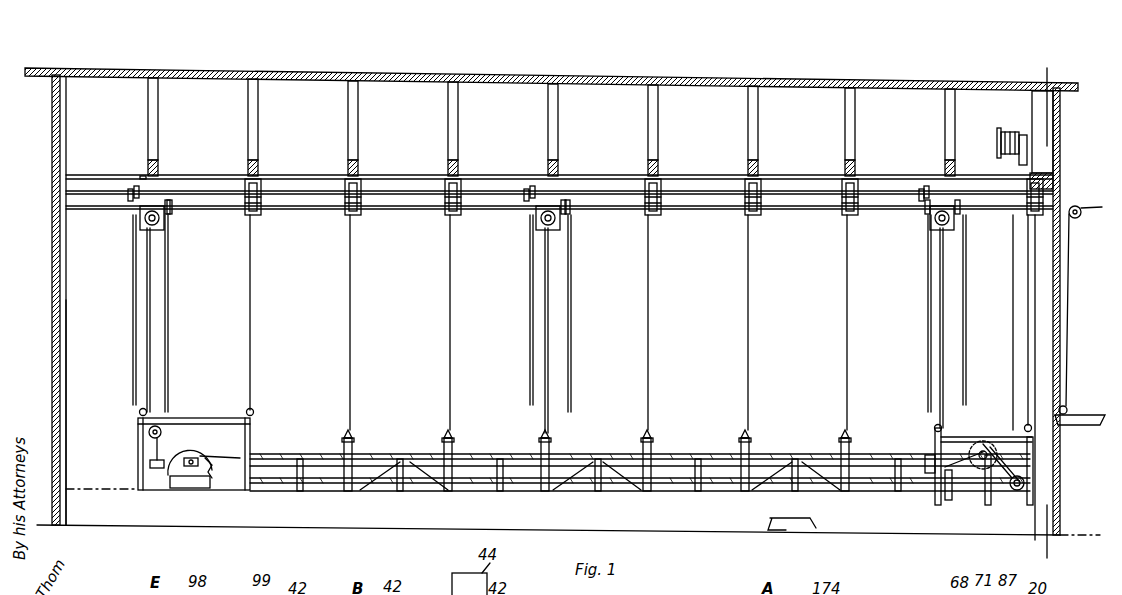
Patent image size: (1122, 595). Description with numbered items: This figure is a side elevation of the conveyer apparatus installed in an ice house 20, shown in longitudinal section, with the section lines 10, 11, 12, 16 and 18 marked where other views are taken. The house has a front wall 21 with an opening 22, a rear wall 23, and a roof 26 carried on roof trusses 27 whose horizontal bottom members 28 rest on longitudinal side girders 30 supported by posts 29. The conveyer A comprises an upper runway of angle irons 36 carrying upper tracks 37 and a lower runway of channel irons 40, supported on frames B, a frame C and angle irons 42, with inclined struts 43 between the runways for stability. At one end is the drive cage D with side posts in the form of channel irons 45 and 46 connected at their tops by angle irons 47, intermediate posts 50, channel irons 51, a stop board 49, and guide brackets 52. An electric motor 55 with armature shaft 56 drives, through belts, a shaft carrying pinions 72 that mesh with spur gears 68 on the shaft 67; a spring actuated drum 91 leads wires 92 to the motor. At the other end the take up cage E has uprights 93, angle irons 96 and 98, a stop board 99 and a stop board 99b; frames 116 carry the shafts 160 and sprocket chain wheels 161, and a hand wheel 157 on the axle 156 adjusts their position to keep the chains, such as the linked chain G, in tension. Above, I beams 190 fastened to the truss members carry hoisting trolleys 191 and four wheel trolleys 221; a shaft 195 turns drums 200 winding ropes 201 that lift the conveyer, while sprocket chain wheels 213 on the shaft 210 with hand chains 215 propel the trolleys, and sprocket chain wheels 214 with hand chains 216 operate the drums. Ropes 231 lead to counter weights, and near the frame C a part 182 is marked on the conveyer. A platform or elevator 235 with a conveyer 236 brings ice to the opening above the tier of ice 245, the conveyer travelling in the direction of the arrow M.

The section line 10 is at (424, 515).
The section line 11 is at (518, 520).
The section line 12 is at (584, 152).
The section line 16 is at (470, 152).
The section line 18 is at (1026, 306).
The ice house 20 is at (786, 287).
The front wall 21 is at (1060, 122).
The opening 22 is at (1066, 295).
The rear wall 23 is at (536, 305).
The roof 26 is at (320, 72).
The roof trusses 27 is at (260, 125).
The horizontal bottom members 28 is at (160, 168).
The posts 29 is at (66, 373).
The longitudinal side girders 30 is at (102, 176).
The angle irons 36 is at (882, 470).
The upper tracks 37 is at (818, 460).
The channel irons 40 is at (272, 492).
The angle irons 42 is at (300, 492).
The inclined struts 43 is at (582, 472).
The channel irons 45 is at (940, 498).
The channel irons 46 is at (1033, 461).
The angle irons 47 is at (1000, 445).
The stop board 49 is at (945, 482).
The channel irons 50 is at (985, 482).
The channel irons 51 is at (988, 494).
The guide brackets 52 is at (932, 453).
The electric motor 55 is at (1025, 483).
The armature shaft 56 is at (1022, 488).
The shaft 67 is at (975, 450).
The spur gears 68 is at (978, 470).
The pinions 72 is at (983, 441).
The spring actuated drum 91 is at (1005, 132).
The wires 92 is at (1013, 268).
The channel irons 93 is at (150, 455).
The angle irons 96 is at (247, 492).
The angle irons 98 is at (230, 424).
The stop board 99 is at (250, 472).
The stop board 99b is at (252, 422).
The frames 116 is at (190, 473).
The axle 156 is at (149, 433).
The hand wheel 157 is at (168, 440).
The shaft 160 is at (222, 468).
The sprocket chain wheel 161 is at (204, 456).
The pin 182 is at (550, 436).
The I beams 190 is at (150, 168).
The hoisting trolleys 191 is at (142, 214).
The shaft 195 is at (690, 210).
The drums 200 is at (558, 330).
The ropes 201 is at (150, 358).
The shaft 210 is at (706, 191).
The sprocket chain wheel 213 is at (128, 194).
The sprocket chain wheel 214 is at (172, 208).
The hand chains 215 is at (133, 318).
The hand chains 216 is at (168, 318).
The four wheel trolley 221 is at (248, 210).
The ropes 231 is at (251, 334).
The platform or elevator 235 is at (1098, 425).
The conveyer 236 is at (1088, 405).
The tier of ice 245 is at (95, 490).
The conveyer A is at (672, 478).
The frames B is at (356, 440).
The frame C is at (552, 444).
The drive cage D is at (984, 465).
The take up cage E is at (194, 450).
The linked chain G is at (411, 438).
The arrow M is at (792, 528).